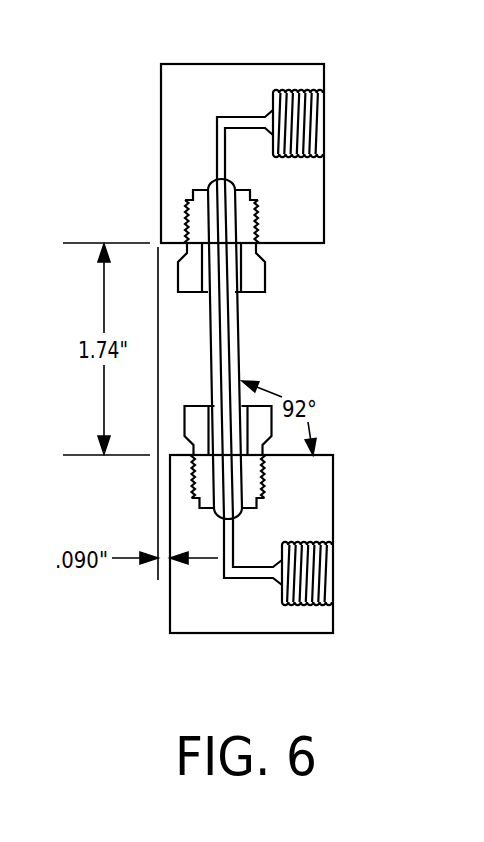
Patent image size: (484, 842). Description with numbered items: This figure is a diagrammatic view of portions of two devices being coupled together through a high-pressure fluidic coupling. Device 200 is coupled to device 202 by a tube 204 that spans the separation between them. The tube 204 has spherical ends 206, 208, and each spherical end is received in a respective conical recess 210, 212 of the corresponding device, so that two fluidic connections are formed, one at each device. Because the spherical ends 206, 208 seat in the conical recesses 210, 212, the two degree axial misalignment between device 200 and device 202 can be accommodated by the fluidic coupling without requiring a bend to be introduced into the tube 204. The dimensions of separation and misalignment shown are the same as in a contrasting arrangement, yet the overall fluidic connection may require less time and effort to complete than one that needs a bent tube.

The device 200 is at (278, 63).
The device 202 is at (278, 634).
The tube 204 is at (238, 348).
The spherical end 206 is at (215, 181).
The spherical end 208 is at (212, 511).
The conical recess 210 is at (234, 185).
The conical recess 212 is at (242, 511).